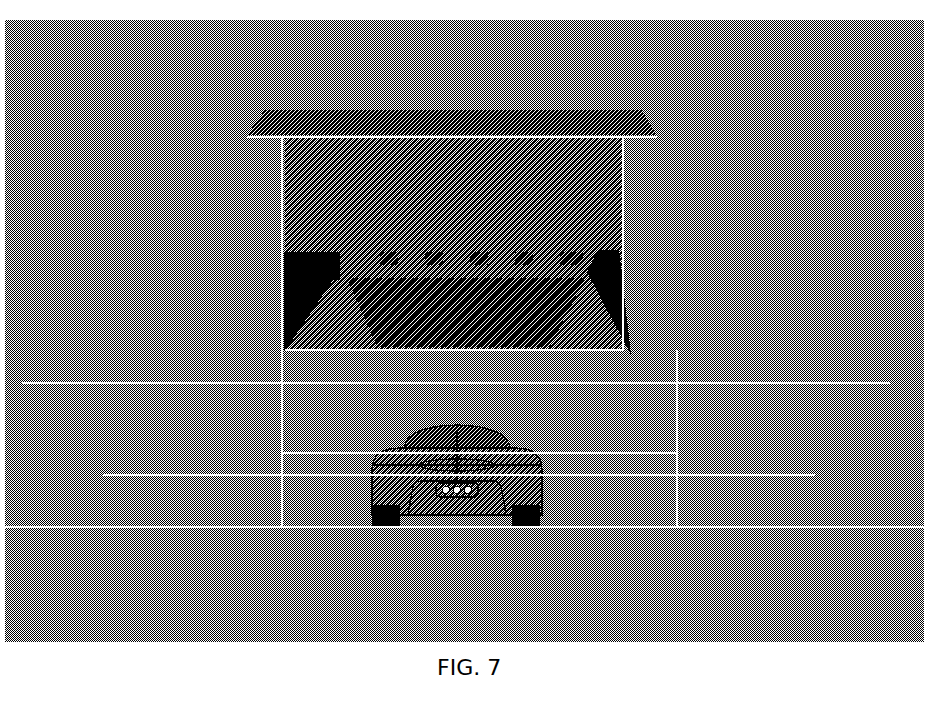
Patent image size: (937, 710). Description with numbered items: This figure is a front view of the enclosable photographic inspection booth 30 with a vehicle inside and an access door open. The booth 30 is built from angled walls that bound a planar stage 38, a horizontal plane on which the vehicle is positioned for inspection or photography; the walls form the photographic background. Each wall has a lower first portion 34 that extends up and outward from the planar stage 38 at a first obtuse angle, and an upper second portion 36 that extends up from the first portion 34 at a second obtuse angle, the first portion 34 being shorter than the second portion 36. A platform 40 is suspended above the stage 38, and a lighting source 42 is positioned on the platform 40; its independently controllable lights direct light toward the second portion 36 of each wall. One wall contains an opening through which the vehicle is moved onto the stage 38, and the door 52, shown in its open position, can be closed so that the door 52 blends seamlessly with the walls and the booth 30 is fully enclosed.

The enclosable photographic inspection booth 30 is at (167, 167).
The first portion 34 is at (204, 475).
The second portion 36 is at (147, 293).
The planar stage 38 is at (340, 530).
The platform 40 is at (555, 301).
The lighting source 42 is at (372, 259).
The door 52 is at (580, 167).